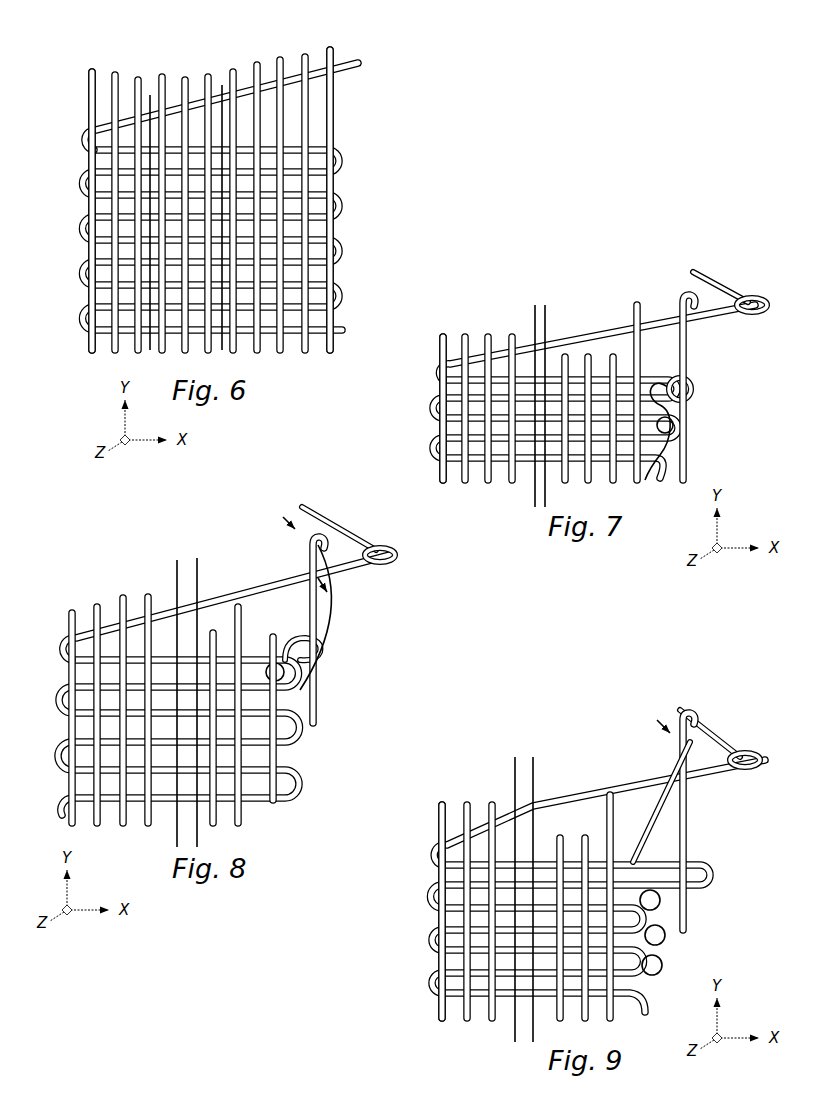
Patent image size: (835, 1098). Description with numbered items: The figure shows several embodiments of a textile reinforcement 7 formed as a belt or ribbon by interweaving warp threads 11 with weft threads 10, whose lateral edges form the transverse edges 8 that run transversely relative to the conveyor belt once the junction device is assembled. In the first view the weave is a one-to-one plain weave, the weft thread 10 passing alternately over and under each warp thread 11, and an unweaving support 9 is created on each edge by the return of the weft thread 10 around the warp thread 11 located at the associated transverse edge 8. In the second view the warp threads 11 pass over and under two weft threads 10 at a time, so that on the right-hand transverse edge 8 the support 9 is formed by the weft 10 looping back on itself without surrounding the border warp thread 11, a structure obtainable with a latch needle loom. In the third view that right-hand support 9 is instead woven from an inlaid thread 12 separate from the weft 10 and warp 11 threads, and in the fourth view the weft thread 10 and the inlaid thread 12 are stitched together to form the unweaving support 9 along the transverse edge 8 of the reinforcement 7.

In FIG. 6, the reinforcement 7 is at (90, 64).
In FIG. 7, the reinforcement 7 is at (462, 328).
In FIG. 8, the reinforcement 7 is at (72, 592).
In FIG. 9, the reinforcement 7 is at (450, 788).
In FIG. 6, the transverse edge 8 is at (76, 233).
In FIG. 7, the transverse edge 8 is at (428, 418).
In FIG. 8, the transverse edge 8 is at (306, 733).
In FIG. 9, the transverse edge 8 is at (670, 948).
In FIG. 6, the unweaving support 9 is at (330, 42).
In FIG. 7, the unweaving support 9 is at (680, 292).
In FIG. 8, the unweaving support 9 is at (319, 630).
In FIG. 9, the unweaving support 9 is at (442, 1028).
In FIG. 6, the weft thread 10 is at (350, 70).
In FIG. 7, the weft thread 10 is at (590, 334).
In FIG. 8, the weft thread 10 is at (252, 594).
In FIG. 9, the weft thread 10 is at (712, 866).
In FIG. 6, the warp thread 11 is at (221, 80).
In FIG. 7, the warp thread 11 is at (545, 340).
In FIG. 8, the warp thread 11 is at (196, 582).
In FIG. 9, the warp thread 11 is at (597, 790).
In FIG. 8, the inlaid thread 12 is at (343, 613).
In FIG. 9, the inlaid thread 12 is at (700, 898).